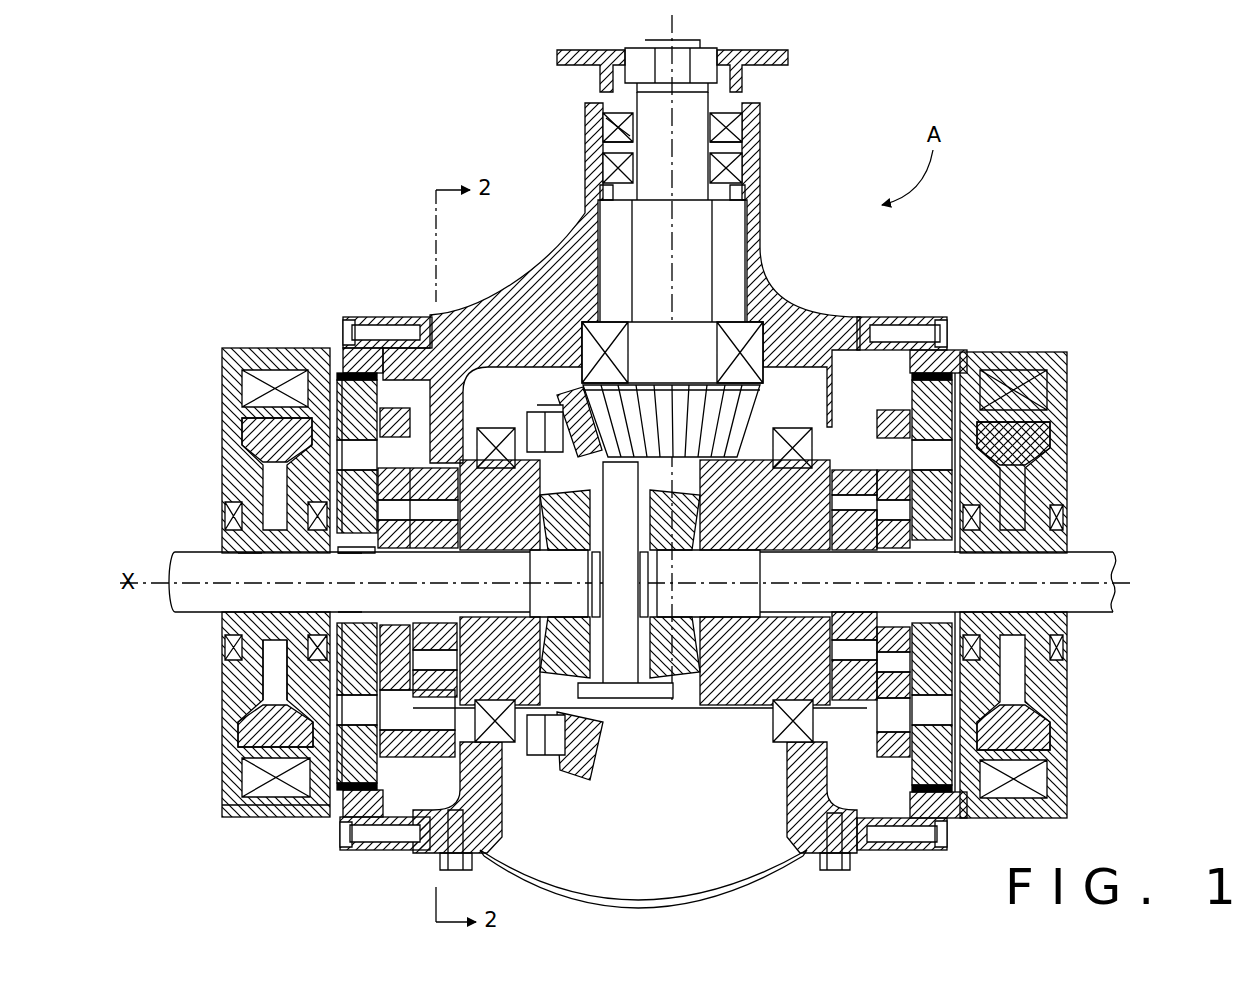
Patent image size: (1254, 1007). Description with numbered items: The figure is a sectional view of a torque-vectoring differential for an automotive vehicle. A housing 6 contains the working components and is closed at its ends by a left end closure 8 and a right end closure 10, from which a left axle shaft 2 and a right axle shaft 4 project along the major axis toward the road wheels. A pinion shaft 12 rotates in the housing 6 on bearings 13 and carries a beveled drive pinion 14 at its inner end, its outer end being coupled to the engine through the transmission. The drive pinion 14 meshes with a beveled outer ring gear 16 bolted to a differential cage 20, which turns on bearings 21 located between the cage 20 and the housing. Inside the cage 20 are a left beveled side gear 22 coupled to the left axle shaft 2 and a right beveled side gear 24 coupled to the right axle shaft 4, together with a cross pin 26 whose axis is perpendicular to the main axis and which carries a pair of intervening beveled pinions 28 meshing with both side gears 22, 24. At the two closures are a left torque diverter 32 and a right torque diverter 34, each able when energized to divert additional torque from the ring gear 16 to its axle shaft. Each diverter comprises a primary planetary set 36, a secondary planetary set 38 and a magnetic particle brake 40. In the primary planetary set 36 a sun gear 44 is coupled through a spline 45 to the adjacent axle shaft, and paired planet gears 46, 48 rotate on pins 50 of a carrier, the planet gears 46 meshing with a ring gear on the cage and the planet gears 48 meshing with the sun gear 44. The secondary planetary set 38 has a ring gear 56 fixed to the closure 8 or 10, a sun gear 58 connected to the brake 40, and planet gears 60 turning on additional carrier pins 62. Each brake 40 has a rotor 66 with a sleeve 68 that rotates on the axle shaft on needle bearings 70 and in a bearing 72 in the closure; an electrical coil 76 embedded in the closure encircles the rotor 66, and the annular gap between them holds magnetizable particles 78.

The left axle shaft 2 is at (195, 600).
The right axle shaft 4 is at (1088, 598).
The housing 6 is at (760, 230).
The left end closure 8 is at (235, 462).
The right end closure 10 is at (1060, 455).
The pinion shaft 12 is at (760, 173).
The bearings 13 is at (606, 162).
The beveled drive pinion 14 is at (822, 347).
The beveled outer ring gear 16 is at (583, 400).
The differential case or cage 20 is at (725, 702).
The bearings 21 is at (470, 440).
The left beveled side gear 22 is at (570, 584).
The right beveled side gear 24 is at (671, 584).
The cross pin 26 is at (630, 735).
The intervening beveled pinions 28 is at (527, 430).
The left torque diverter 32 is at (213, 340).
The right torque diverter 34 is at (1015, 330).
The primary planetary set 36 is at (545, 705).
The secondary planetary set 38 is at (333, 492).
The magnetic particle brake 40 is at (258, 408).
The sun gear 44 is at (415, 470).
The spline 45 is at (450, 558).
The planet gears 46 is at (430, 657).
The planet gears 48 is at (395, 408).
The pins 50 is at (375, 370).
The ring gear 56 is at (333, 350).
The sun gear 58 is at (350, 556).
The planet gears 60 is at (317, 792).
The pins 62 is at (357, 705).
The rotor 66 is at (253, 713).
The sleeve 68 is at (225, 548).
The needle bearings 70 is at (240, 556).
The bearing 72 is at (225, 515).
The electrical coil 76 is at (227, 808).
The particles 78 is at (238, 780).